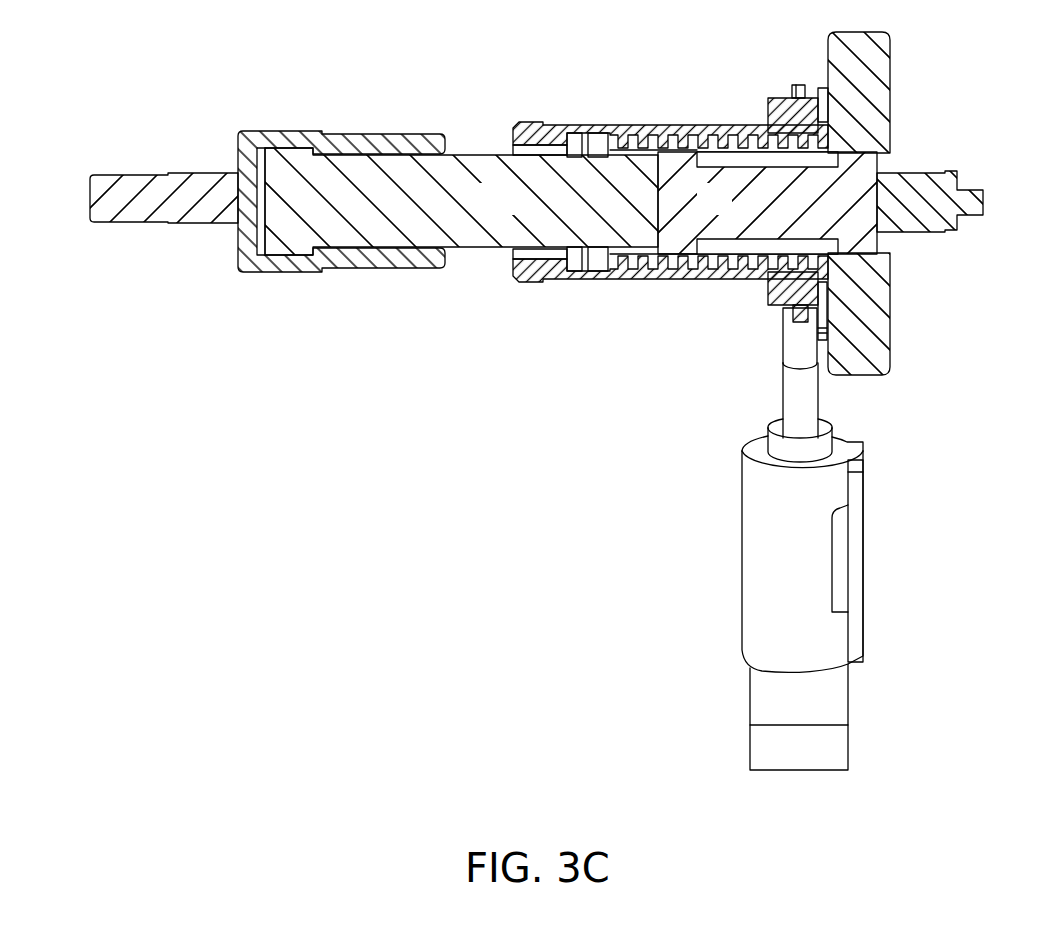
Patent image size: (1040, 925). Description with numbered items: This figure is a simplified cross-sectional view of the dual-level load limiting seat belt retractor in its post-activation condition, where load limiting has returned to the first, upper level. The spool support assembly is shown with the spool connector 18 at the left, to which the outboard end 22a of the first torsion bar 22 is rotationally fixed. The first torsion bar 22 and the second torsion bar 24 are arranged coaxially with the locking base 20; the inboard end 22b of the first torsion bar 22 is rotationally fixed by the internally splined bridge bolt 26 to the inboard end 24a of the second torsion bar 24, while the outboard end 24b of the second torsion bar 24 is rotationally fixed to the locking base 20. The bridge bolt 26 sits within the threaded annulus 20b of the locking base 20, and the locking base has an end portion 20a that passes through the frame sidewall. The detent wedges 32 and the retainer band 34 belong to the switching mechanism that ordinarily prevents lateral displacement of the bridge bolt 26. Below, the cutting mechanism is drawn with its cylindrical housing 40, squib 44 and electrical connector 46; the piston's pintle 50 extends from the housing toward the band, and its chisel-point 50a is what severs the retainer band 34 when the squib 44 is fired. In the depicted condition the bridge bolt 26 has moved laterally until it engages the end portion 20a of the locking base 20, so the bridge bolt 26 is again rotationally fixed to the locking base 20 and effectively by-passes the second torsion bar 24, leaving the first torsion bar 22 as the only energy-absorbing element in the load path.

The spool connector 18 is at (207, 218).
The locking base 20 is at (930, 212).
The end portion 20a is at (884, 96).
The annulus 20b is at (625, 125).
The first torsion bar 22 is at (512, 212).
The outboard end 22a is at (293, 178).
The inboard end 22b is at (645, 247).
The second torsion bar 24 is at (729, 212).
The inboard end 24a is at (680, 152).
The outboard end 24b is at (864, 186).
The bridge bolt 26 is at (677, 272).
The detent wedges 32 is at (772, 100).
The retainer band 34 is at (797, 85).
The housing 40 is at (745, 520).
The squib 44 is at (843, 698).
The electrical connector 46 is at (843, 745).
The pintle 50 is at (813, 407).
The chisel-point 50a is at (785, 356).